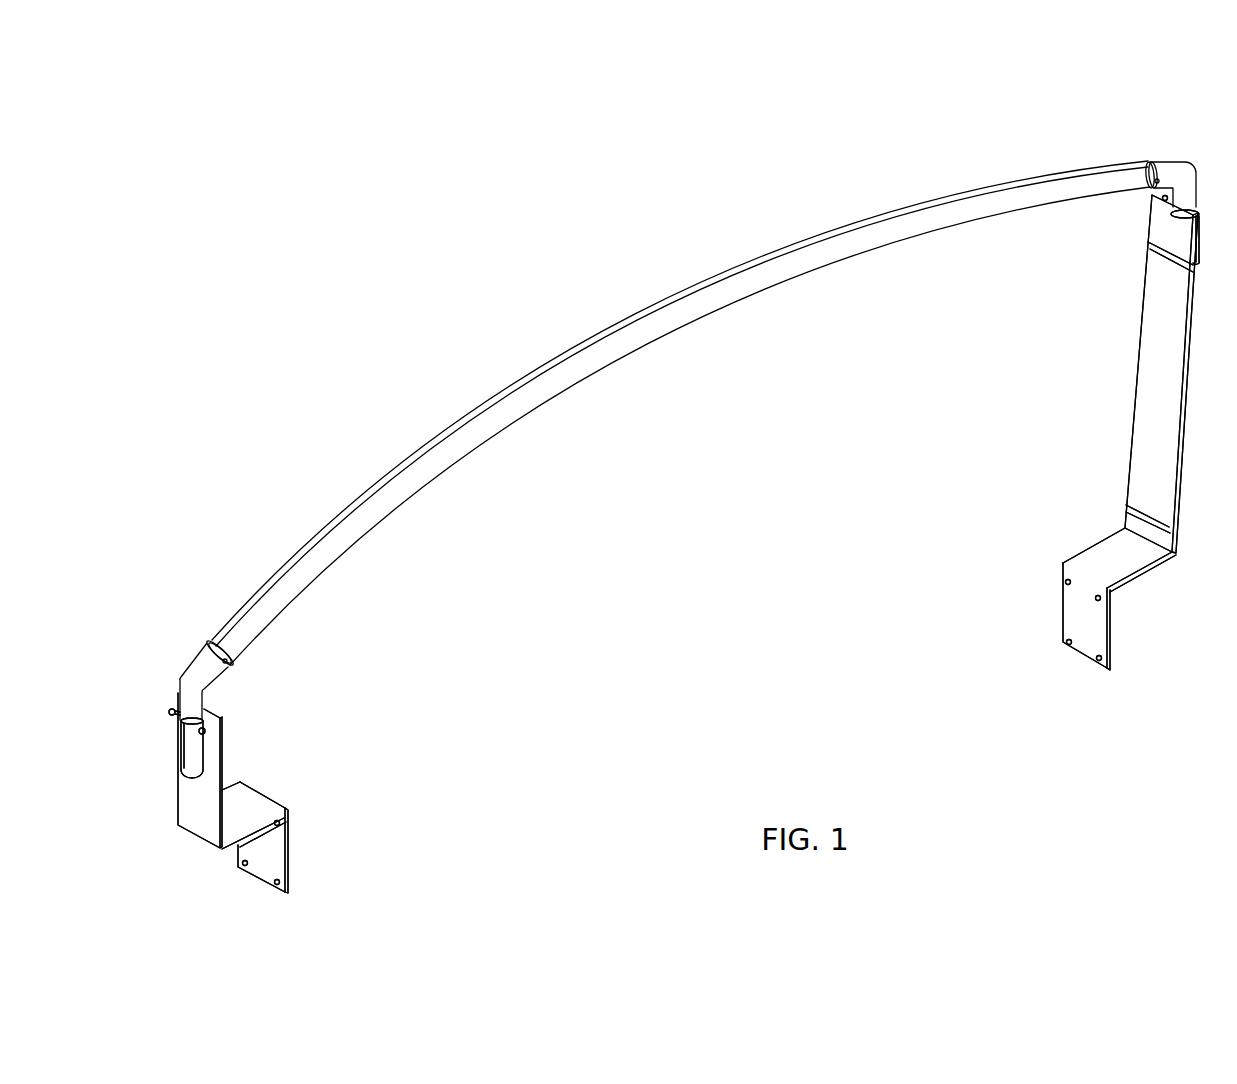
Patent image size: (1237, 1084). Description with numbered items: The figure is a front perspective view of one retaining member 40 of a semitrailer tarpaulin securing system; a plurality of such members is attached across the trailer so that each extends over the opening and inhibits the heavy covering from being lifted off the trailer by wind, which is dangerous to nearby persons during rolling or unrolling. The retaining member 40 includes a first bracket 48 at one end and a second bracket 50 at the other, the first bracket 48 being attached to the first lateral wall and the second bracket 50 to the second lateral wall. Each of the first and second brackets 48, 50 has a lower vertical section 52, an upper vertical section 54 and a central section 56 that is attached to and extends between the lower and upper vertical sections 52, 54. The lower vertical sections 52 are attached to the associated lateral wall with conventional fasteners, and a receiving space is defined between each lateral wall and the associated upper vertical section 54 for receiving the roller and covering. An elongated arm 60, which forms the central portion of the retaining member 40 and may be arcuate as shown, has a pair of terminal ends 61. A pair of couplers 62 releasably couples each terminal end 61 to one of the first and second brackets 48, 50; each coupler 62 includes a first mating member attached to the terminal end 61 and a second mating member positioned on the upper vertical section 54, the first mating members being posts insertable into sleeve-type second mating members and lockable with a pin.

The retaining member 40 is at (430, 333).
The first bracket 48 is at (1173, 553).
The second bracket 50 is at (216, 848).
The lower vertical section 52 is at (288, 850).
The upper vertical section 54 is at (211, 766).
The central section 56 is at (258, 800).
The elongated arm 60 is at (498, 425).
The terminal end 61 is at (226, 628).
The coupler 62 is at (157, 684).